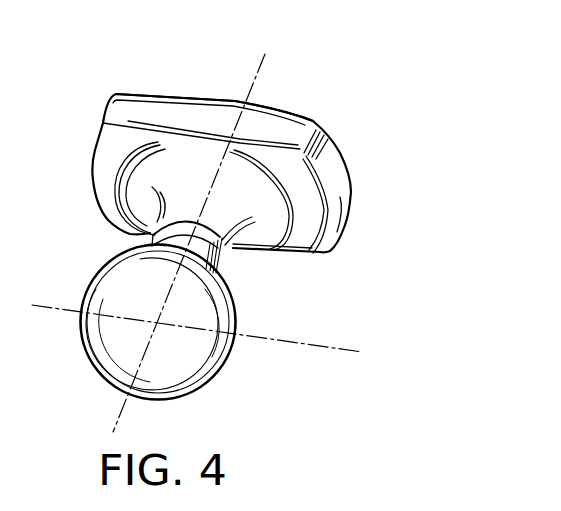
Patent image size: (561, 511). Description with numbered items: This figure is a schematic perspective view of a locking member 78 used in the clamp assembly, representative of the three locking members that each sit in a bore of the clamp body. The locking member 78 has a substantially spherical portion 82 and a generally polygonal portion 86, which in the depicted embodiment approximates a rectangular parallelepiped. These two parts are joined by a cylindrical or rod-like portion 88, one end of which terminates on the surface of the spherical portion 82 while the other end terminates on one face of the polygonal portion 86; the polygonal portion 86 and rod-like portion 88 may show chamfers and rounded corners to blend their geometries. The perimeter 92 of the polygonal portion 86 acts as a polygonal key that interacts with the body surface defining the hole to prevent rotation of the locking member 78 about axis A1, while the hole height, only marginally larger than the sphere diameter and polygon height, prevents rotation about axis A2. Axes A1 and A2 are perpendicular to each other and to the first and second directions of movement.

The locking member 78 is at (60, 166).
The spherical portion 82 is at (228, 350).
The polygonal portion 86 is at (346, 173).
The cylindrical portion 88 is at (220, 262).
The perimeter 92 is at (183, 115).
The axis A1 is at (255, 80).
The axis A2 is at (345, 350).